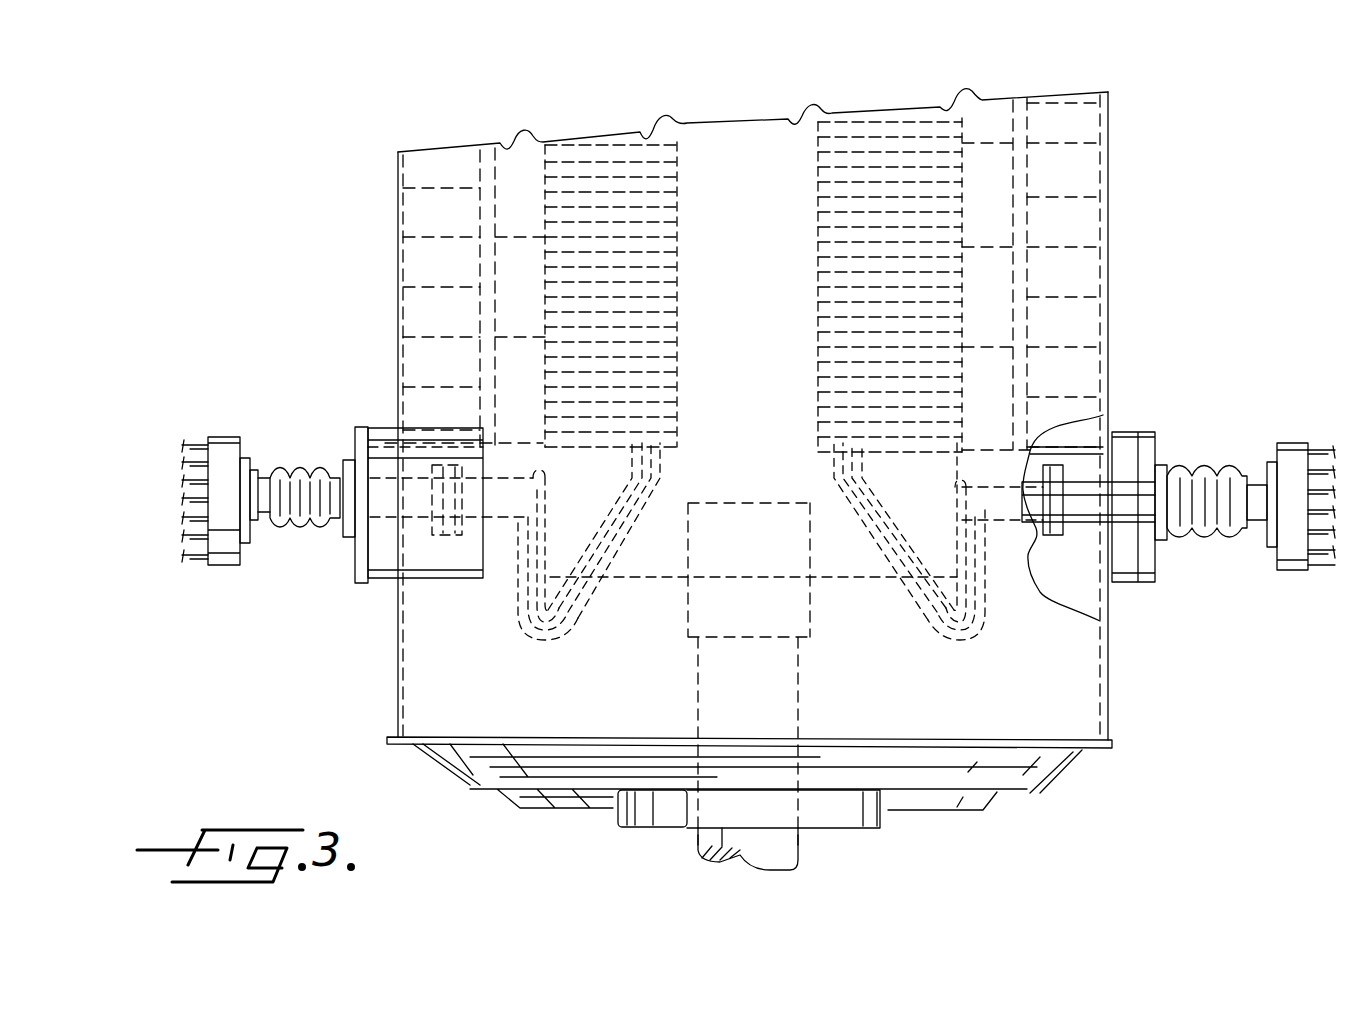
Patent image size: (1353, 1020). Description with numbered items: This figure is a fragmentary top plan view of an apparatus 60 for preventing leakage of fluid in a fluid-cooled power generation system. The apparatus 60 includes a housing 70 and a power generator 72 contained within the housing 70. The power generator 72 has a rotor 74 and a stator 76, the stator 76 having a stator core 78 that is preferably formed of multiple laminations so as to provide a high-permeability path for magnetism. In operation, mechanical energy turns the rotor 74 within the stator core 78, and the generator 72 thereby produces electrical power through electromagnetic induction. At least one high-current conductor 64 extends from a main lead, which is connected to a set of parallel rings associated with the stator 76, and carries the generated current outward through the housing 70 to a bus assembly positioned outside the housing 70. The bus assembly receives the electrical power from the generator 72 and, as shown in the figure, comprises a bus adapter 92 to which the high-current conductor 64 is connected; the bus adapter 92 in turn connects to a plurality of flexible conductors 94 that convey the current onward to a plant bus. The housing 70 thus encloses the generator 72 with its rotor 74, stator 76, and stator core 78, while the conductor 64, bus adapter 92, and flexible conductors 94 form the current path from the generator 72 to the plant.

The apparatus 60 is at (336, 403).
The high-current conductor 64 is at (322, 527).
The housing 70 is at (1057, 782).
The power generator 72 is at (945, 85).
The rotor 74 is at (816, 647).
The stator 76 is at (861, 592).
The stator core 78 is at (627, 578).
The bus adapter 92 is at (210, 566).
The flexible conductors 94 is at (183, 433).